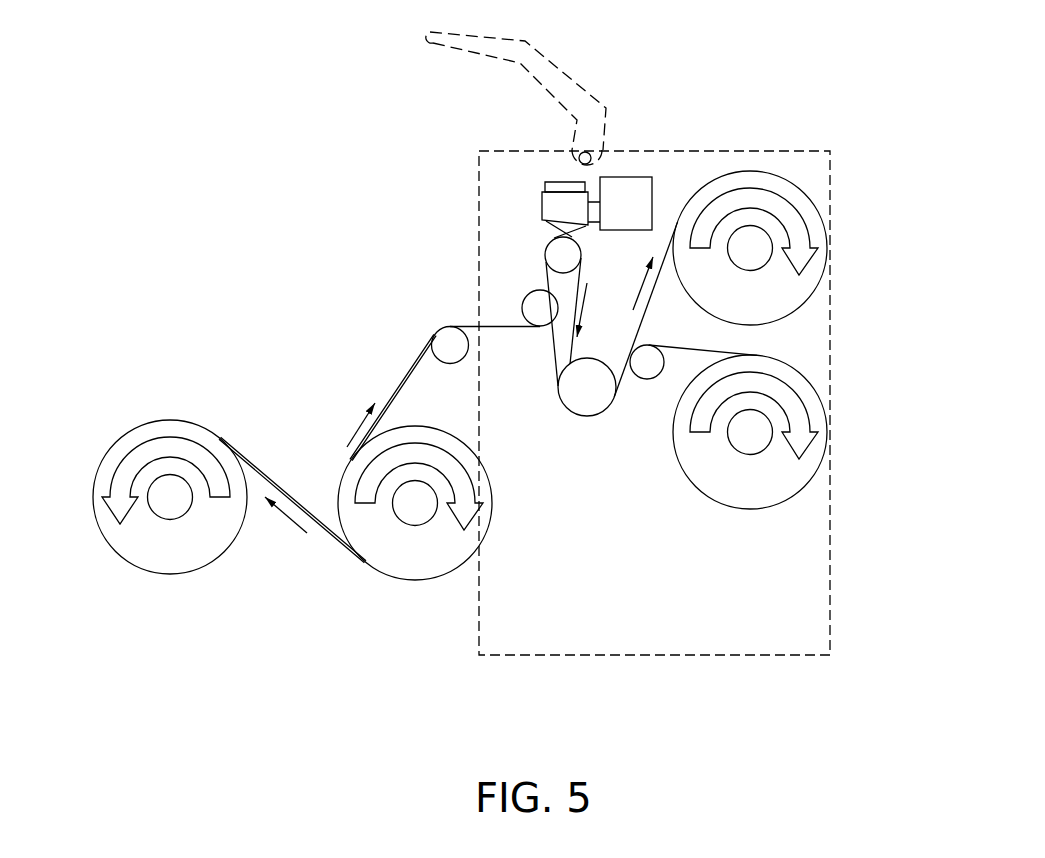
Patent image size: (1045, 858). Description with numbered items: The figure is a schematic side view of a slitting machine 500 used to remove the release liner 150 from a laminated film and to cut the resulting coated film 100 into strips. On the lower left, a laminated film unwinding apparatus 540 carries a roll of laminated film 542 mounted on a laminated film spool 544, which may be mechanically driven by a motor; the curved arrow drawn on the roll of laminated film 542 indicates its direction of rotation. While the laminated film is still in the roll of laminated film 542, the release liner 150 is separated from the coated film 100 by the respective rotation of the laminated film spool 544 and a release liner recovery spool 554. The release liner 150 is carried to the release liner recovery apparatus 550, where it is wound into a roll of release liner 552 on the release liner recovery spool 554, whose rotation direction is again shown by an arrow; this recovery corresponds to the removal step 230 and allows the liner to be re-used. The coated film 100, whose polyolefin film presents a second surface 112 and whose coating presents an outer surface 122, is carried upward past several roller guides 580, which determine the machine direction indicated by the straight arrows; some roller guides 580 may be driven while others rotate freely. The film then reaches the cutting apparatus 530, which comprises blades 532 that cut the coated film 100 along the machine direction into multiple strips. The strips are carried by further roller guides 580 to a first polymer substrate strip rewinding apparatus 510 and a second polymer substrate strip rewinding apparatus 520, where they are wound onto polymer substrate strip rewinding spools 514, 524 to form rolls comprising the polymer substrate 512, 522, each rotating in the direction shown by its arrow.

The slitting machine 500 is at (218, 165).
The cutting apparatus 530 is at (542, 212).
The blades 532 is at (548, 226).
The roller guides 580 is at (578, 243).
The coated film 100 is at (693, 348).
The second surface 112 is at (404, 383).
The outer surface 122 is at (427, 347).
The release liner 150 is at (284, 488).
The step of removing the release liner 230 is at (315, 577).
The first polymer substrate strip rewinding apparatus 510 is at (842, 242).
The roll comprising the polymer substrate 512 is at (822, 278).
The polymer substrate strip rewinding spool 514 is at (747, 271).
The second polymer substrate strip rewinding apparatus 520 is at (840, 408).
The roll comprising the polymer substrate 522 is at (748, 510).
The polymer substrate strip rewinding spool 524 is at (727, 433).
The laminated film unwinding apparatus 540 is at (385, 627).
The roll of laminated film 542 is at (491, 517).
The laminated film spool 544 is at (415, 526).
The release liner recovery apparatus 550 is at (95, 568).
The roll of release liner 552 is at (167, 420).
The release liner recovery spool 554 is at (170, 520).